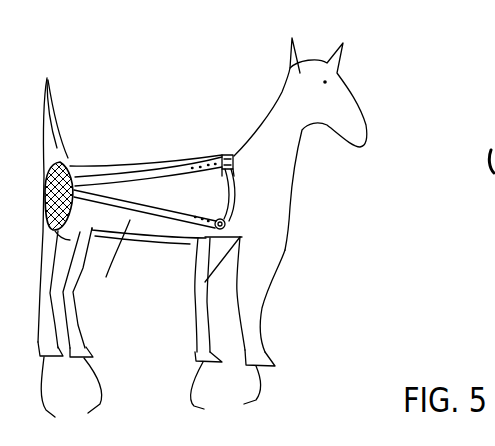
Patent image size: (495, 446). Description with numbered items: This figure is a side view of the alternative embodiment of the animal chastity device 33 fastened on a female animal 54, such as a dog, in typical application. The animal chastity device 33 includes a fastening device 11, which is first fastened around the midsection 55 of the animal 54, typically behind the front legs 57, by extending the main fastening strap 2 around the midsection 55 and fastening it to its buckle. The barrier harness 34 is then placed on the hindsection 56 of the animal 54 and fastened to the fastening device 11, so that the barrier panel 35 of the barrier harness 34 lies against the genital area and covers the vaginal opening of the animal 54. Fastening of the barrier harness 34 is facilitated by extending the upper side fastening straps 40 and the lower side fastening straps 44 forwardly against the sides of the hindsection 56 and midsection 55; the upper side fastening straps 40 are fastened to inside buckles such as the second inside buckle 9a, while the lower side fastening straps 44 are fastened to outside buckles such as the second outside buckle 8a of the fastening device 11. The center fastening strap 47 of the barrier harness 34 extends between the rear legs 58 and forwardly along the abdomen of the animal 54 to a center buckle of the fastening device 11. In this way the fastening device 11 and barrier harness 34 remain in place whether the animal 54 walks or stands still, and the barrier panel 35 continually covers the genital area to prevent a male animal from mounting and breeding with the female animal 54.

The main fastening strap 2 is at (233, 195).
The second outside buckle 8a is at (226, 224).
The second inside buckle 9a is at (234, 159).
The fastening device 11 is at (233, 149).
The animal chastity device 33 is at (144, 156).
The barrier harness 34 is at (86, 318).
The barrier panel 35 is at (70, 158).
The upper side fastening straps 40 is at (166, 164).
The lower side fastening straps 44 is at (178, 213).
The center fastening strap 47 is at (213, 236).
The female animal 54 is at (284, 91).
The midsection 55 is at (63, 237).
The hindsection 56 is at (76, 166).
The front legs 57 is at (233, 329).
The rear legs 58 is at (71, 397).